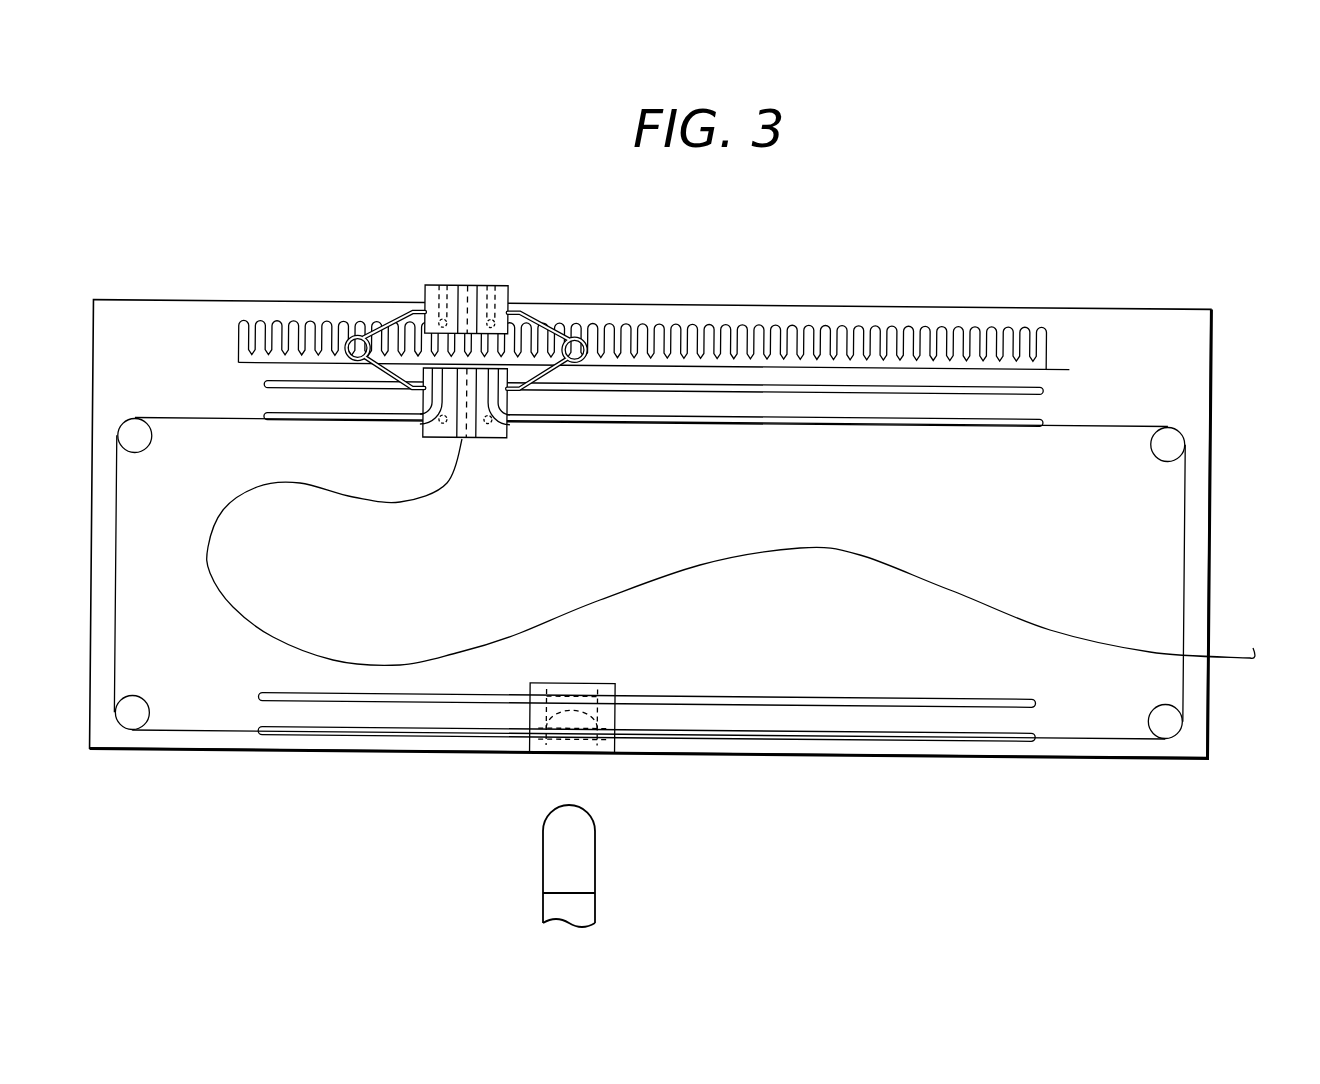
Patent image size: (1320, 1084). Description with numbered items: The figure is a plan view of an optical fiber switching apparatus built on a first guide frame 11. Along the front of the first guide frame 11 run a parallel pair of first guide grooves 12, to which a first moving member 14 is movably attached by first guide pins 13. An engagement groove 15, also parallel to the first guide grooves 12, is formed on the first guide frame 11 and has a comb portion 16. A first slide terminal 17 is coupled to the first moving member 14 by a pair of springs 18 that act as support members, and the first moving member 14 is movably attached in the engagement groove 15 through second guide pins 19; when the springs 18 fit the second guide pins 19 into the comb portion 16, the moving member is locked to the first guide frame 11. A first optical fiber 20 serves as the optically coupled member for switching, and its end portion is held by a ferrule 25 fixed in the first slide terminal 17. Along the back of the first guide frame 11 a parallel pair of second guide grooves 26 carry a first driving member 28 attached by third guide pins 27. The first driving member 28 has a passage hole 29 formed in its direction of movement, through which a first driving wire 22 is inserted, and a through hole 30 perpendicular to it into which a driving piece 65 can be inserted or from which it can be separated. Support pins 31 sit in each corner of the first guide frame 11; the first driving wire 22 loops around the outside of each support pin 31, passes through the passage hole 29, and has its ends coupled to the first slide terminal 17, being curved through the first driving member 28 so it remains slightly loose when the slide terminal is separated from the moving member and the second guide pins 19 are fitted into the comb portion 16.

The first guide frame 11 is at (1116, 318).
The first guide grooves 12 is at (887, 386).
The first guide pins 13 is at (426, 443).
The first moving member 14 is at (485, 440).
The engagement groove 15 is at (645, 325).
The comb portion 16 is at (722, 332).
The first slide terminal 17 is at (508, 300).
The springs 18 is at (392, 302).
The second guide pins 19 is at (440, 297).
The first optical fiber 20 is at (952, 592).
The first driving wire 22 is at (1126, 426).
The ferrule 25 is at (463, 287).
The second guide grooves 26 is at (852, 705).
The third guide pins 27 is at (558, 684).
The first driving member 28 is at (530, 710).
The passage hole 29 is at (620, 722).
The through hole 30 is at (548, 684).
The support pins 31 is at (138, 432).
The driving piece 65 is at (592, 855).